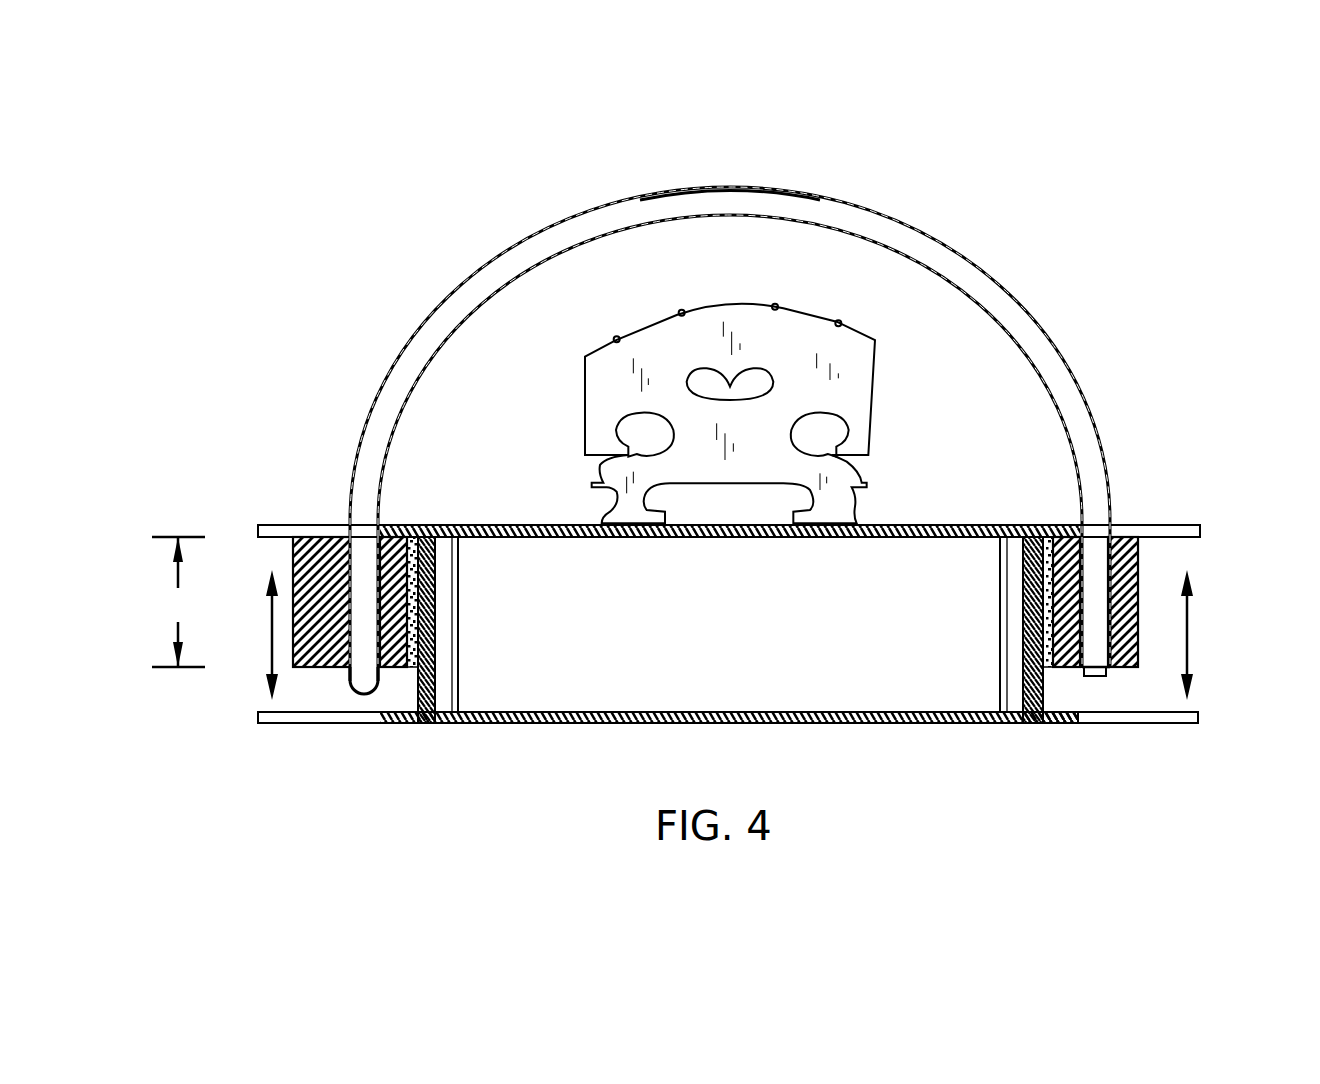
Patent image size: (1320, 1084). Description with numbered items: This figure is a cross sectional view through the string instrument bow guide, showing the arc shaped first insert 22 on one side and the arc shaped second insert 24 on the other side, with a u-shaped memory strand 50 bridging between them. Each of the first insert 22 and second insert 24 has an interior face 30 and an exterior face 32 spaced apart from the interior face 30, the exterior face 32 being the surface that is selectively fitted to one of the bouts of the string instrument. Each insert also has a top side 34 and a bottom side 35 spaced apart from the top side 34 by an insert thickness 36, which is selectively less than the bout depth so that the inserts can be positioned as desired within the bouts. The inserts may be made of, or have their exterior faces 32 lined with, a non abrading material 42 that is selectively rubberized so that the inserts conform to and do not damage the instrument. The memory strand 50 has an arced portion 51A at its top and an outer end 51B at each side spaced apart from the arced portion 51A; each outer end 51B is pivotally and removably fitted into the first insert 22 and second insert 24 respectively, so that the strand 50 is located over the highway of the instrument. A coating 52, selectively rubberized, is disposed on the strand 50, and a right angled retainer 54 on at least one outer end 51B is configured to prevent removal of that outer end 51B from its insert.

The first insert 22 is at (317, 537).
The second insert 24 is at (1138, 668).
The interior face 30 is at (290, 548).
The exterior face 32 is at (413, 598).
The top side 34 is at (343, 537).
The bottom side 35 is at (305, 668).
The insert thickness 36 is at (178, 602).
The non abrading material 42 is at (1043, 724).
The memory strand 50 is at (730, 317).
The arced portion 51A is at (723, 188).
The outer end 51B is at (733, 746).
The coating 52 is at (1040, 337).
The right angled retainer 54 is at (357, 683).